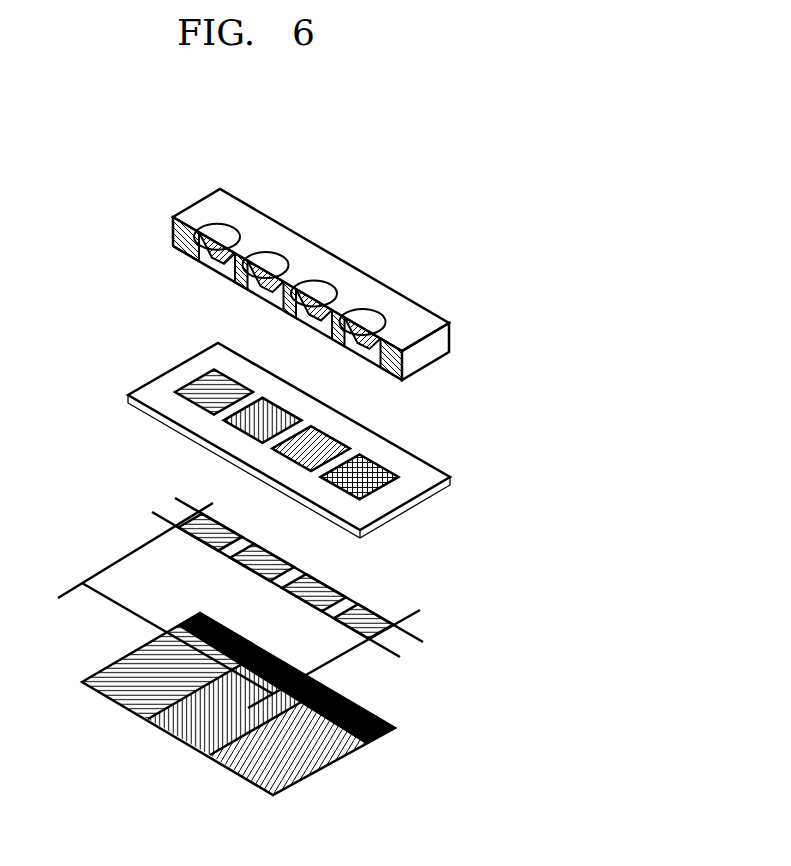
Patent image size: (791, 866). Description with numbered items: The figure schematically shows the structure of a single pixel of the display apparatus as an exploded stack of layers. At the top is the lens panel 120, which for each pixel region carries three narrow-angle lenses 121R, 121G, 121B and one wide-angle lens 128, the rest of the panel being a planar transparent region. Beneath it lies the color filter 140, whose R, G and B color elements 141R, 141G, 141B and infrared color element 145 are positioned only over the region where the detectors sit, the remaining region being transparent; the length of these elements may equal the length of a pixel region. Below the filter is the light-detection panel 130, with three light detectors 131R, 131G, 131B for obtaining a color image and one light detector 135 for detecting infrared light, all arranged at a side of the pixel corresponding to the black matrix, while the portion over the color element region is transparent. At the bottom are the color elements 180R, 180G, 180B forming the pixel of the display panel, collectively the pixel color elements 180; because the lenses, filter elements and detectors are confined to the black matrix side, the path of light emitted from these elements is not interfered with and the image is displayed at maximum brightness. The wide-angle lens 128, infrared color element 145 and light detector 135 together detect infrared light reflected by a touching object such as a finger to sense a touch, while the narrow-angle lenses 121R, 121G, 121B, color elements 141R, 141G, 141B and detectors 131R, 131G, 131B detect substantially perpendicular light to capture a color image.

The lens panel 120 is at (269, 264).
The narrow-angle lens 121R is at (218, 237).
The narrow-angle lens 121G is at (265, 268).
The narrow-angle lens 121B is at (315, 297).
The wide-angle lens 128 is at (362, 325).
The color filter 140 is at (261, 427).
The R color element 141R is at (231, 385).
The G color element 141G is at (276, 413).
The B color element 141B is at (328, 440).
The infrared color element 145 is at (375, 467).
The light-detection panel 130 is at (238, 598).
The light detector 131R is at (223, 532).
The light detector 131G is at (272, 557).
The light detector 131B is at (318, 587).
The light detector 135 is at (368, 613).
The color elements of the pixel 180 is at (214, 712).
The color element 180R is at (122, 698).
The color element 180G is at (188, 737).
The color element 180B is at (250, 773).